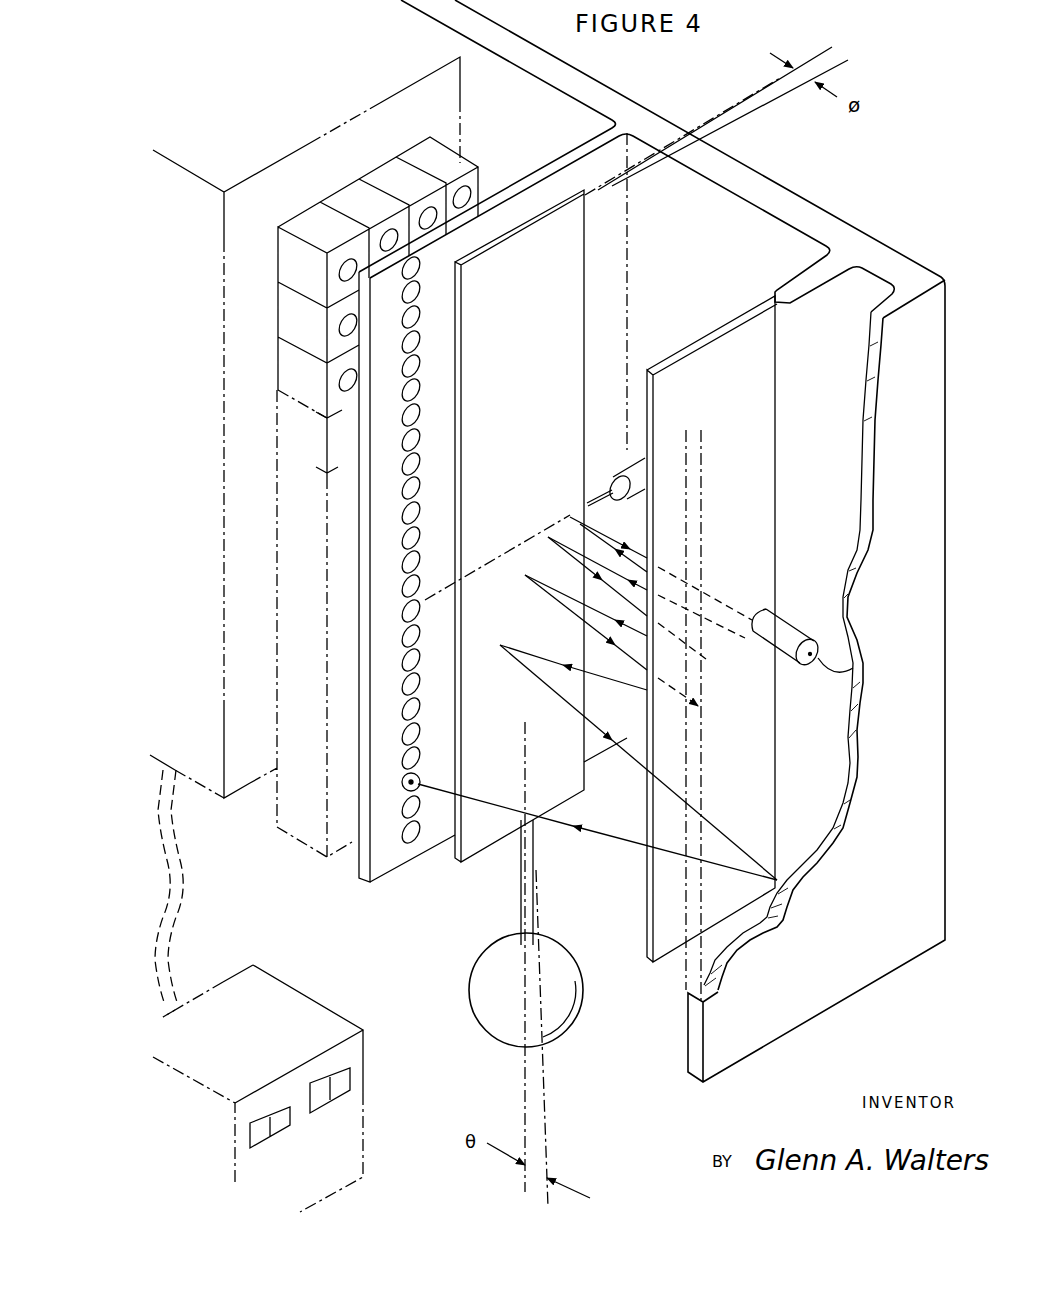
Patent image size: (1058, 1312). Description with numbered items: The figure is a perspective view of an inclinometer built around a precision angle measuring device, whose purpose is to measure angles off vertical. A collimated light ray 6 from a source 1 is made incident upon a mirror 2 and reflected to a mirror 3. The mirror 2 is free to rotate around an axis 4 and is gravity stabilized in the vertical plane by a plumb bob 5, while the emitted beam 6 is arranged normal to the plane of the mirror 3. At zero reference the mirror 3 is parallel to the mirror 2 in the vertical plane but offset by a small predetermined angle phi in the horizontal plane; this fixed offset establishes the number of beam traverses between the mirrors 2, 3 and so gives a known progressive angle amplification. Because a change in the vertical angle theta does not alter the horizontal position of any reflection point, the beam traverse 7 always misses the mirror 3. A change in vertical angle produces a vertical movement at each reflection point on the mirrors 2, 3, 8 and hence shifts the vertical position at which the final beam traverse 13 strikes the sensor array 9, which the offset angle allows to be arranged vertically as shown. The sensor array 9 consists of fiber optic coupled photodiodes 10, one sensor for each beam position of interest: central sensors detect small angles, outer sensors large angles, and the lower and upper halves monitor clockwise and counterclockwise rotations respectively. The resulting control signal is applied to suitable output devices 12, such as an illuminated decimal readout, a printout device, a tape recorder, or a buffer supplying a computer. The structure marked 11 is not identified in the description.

The source 1 is at (797, 632).
The mirror 2 is at (543, 273).
The mirror 3 is at (667, 357).
The axis 4 is at (428, 600).
The plumb bob 5 is at (577, 1027).
The collimated light ray 6 is at (616, 495).
The beam traverse 7 is at (705, 820).
The mirror 8 is at (843, 803).
The sensor array 9 is at (404, 783).
The fiber optic coupled photodiodes 10 is at (300, 217).
The support wall 11 is at (382, 88).
The output devices 12 is at (365, 1160).
The final beam traverse 13 is at (492, 800).